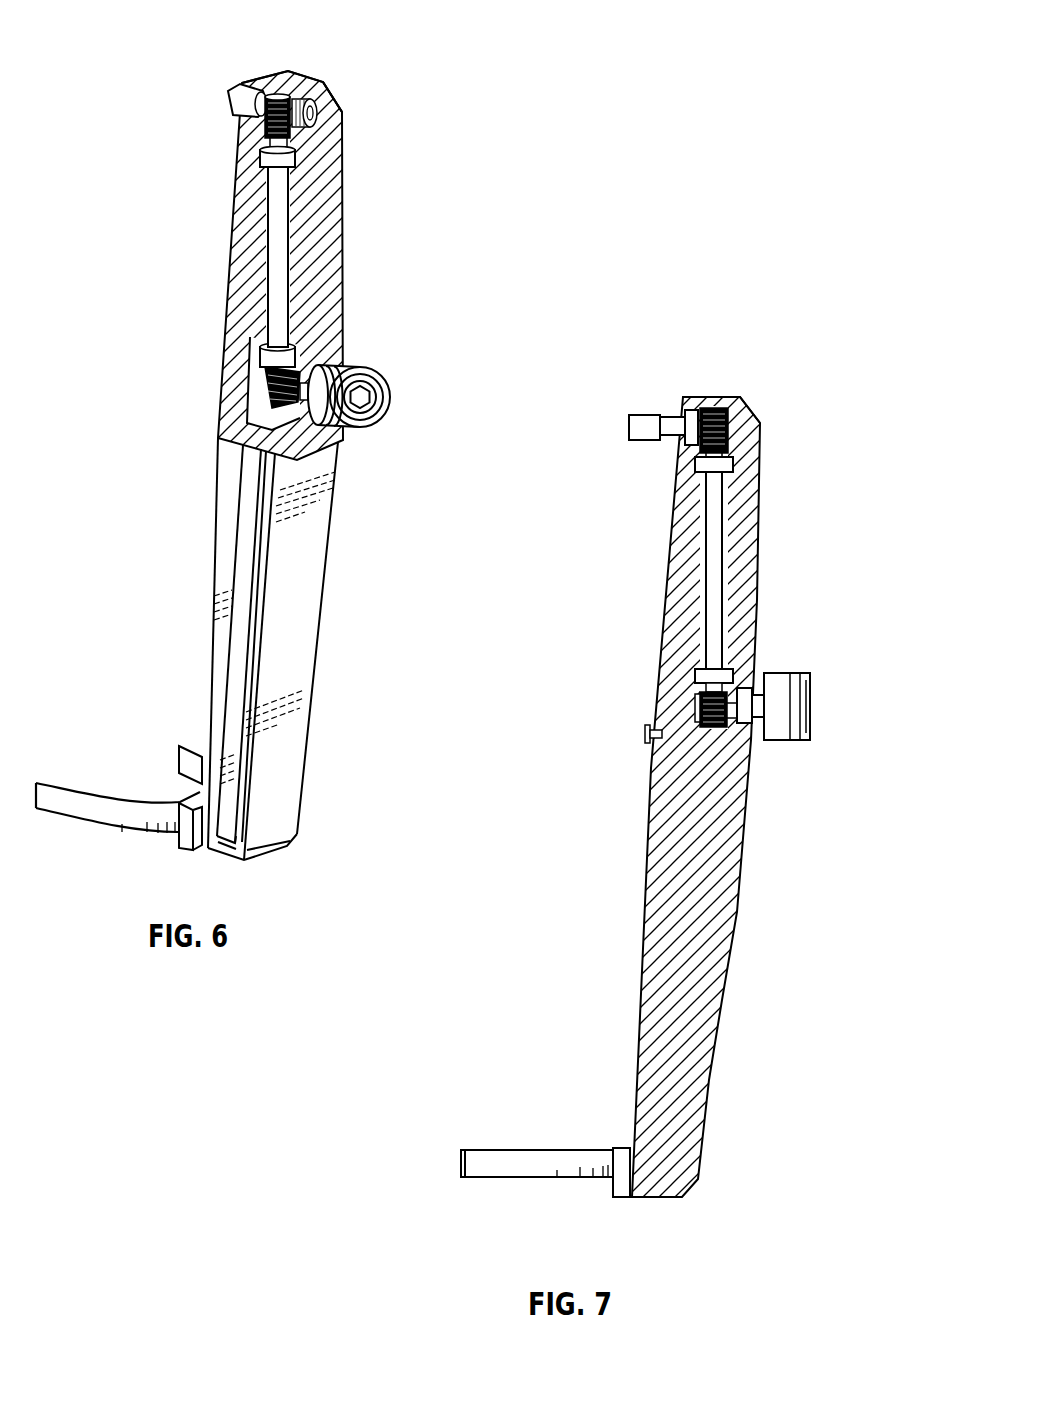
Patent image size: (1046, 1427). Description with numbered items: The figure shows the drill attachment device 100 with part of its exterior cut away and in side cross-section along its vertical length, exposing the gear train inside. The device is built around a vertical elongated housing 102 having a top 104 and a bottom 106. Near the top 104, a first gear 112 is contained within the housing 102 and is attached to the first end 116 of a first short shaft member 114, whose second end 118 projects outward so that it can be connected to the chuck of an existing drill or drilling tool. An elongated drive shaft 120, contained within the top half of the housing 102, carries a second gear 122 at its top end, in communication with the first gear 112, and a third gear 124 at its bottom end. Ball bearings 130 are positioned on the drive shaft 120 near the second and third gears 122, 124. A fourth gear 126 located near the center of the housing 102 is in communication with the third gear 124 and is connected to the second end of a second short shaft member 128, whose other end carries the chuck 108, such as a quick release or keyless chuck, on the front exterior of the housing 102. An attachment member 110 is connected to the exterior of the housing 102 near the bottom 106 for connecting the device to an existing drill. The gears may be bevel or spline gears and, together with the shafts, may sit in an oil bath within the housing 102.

In FIG. 6, the drill attachment device 100 is at (489, 36).
In FIG. 7, the drill attachment device 100 is at (774, 299).
In FIG. 6, the vertical elongated housing 102 is at (330, 163).
In FIG. 7, the vertical elongated housing 102 is at (710, 903).
In FIG. 6, the top 104 is at (272, 75).
In FIG. 7, the top 104 is at (720, 398).
In FIG. 6, the bottom 106 is at (262, 852).
In FIG. 7, the bottom 106 is at (655, 1197).
In FIG. 6, the chuck 108 is at (350, 364).
In FIG. 7, the chuck 108 is at (793, 673).
In FIG. 6, the attachment member 110 is at (112, 800).
In FIG. 7, the attachment member 110 is at (535, 1148).
In FIG. 6, the first gear 112 is at (320, 88).
In FIG. 7, the first short shaft member 114 is at (673, 425).
In FIG. 7, the first end 116 is at (693, 415).
In FIG. 6, the second end 118 is at (238, 93).
In FIG. 7, the second end 118 is at (635, 433).
In FIG. 6, the elongated drive shaft 120 is at (283, 250).
In FIG. 7, the elongated drive shaft 120 is at (730, 548).
In FIG. 6, the second gear 122 is at (265, 128).
In FIG. 7, the second gear 122 is at (728, 425).
In FIG. 6, the third gear 124 is at (277, 380).
In FIG. 7, the third gear 124 is at (715, 728).
In FIG. 6, the fourth gear 126 is at (295, 368).
In FIG. 7, the fourth gear 126 is at (698, 712).
In FIG. 7, the second short shaft member 128 is at (737, 708).
In FIG. 6, the ball bearings 130 is at (262, 152).
In FIG. 7, the ball bearings 130 is at (740, 462).